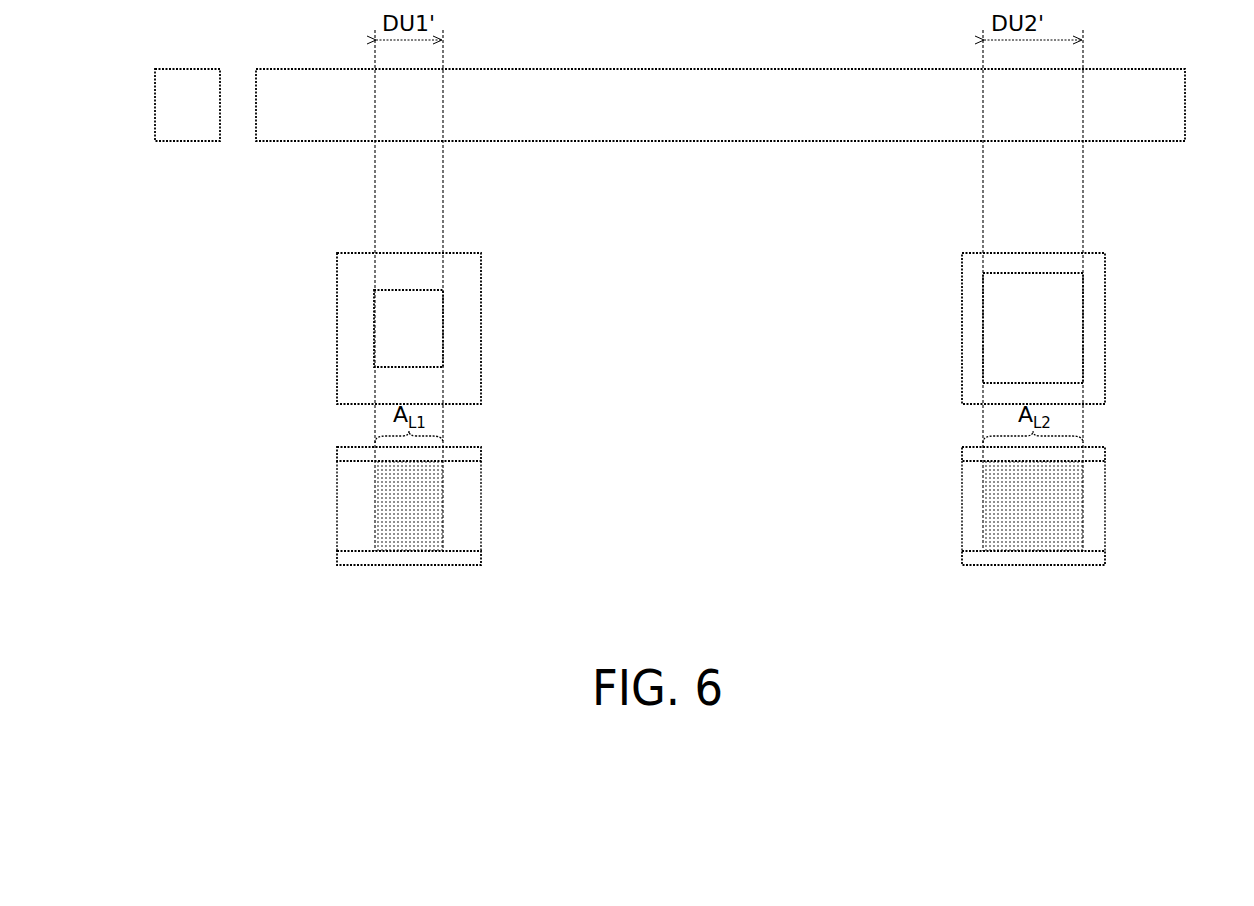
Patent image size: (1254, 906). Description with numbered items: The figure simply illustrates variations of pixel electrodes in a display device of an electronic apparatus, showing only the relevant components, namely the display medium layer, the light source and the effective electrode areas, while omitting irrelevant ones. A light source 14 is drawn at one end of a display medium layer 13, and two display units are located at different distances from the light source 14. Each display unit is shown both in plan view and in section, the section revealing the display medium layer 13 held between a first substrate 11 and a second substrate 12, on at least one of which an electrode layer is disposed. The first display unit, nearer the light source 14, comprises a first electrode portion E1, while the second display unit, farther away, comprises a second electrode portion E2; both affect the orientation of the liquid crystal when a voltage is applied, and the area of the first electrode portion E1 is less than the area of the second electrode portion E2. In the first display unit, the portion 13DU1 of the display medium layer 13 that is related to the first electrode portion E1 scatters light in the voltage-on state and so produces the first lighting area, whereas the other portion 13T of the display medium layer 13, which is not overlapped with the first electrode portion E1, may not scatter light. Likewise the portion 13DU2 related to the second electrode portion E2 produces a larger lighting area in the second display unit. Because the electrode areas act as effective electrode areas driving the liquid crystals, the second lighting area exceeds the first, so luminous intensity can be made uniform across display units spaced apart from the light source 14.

The light source 14 is at (176, 108).
The display medium layer 13 is at (1163, 106).
The first electrode portion E1 is at (433, 330).
The second electrode portion E2 is at (1078, 334).
The second substrate 12 is at (476, 458).
The first substrate 11 is at (476, 561).
The other portion of the display medium layer 13T is at (1129, 503).
The portion of the display medium layer in the first display unit 13DU1 is at (415, 537).
The portion of the display medium layer in the second display unit 13DU2 is at (1055, 537).